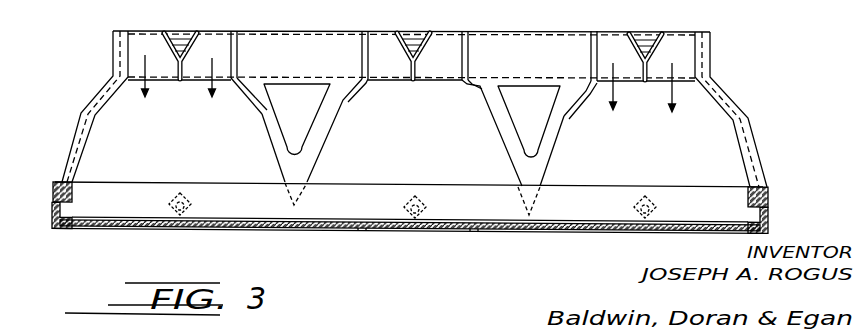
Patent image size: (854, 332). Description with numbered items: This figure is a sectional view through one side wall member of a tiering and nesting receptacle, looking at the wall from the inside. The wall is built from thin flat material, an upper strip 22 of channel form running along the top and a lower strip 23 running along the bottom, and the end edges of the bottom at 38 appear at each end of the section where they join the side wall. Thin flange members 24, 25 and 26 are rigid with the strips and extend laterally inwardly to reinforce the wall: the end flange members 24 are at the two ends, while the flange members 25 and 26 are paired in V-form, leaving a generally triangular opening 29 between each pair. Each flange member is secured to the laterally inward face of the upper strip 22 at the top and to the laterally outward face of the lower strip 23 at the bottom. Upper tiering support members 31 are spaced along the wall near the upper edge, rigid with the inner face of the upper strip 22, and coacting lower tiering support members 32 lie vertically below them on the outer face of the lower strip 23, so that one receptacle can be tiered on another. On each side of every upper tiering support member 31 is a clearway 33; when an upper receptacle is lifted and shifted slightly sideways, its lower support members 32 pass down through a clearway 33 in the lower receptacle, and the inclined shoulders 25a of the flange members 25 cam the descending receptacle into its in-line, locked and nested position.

The upper strip 22 is at (411, 56).
The lower strip 23 is at (401, 176).
The end flange member 24 is at (90, 129).
The flange member 25 is at (266, 133).
The inclined shoulder 25a is at (252, 104).
The flange member 26 is at (333, 122).
The triangular opening 29 is at (412, 120).
The upper tiering support member 31 is at (190, 37).
The lower tiering support member 32 is at (192, 201).
The clearway 33 is at (412, 72).
The end edge of the bottom 38 is at (53, 200).